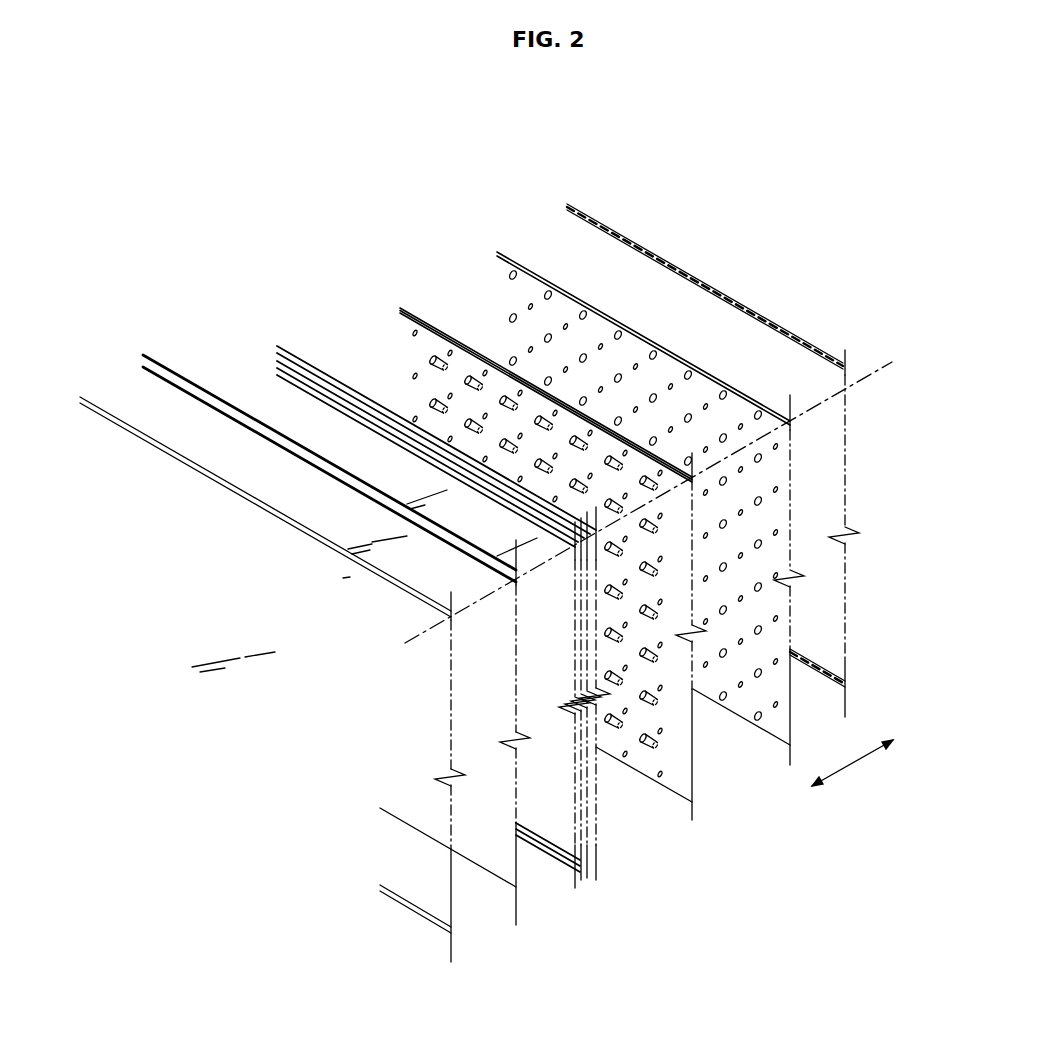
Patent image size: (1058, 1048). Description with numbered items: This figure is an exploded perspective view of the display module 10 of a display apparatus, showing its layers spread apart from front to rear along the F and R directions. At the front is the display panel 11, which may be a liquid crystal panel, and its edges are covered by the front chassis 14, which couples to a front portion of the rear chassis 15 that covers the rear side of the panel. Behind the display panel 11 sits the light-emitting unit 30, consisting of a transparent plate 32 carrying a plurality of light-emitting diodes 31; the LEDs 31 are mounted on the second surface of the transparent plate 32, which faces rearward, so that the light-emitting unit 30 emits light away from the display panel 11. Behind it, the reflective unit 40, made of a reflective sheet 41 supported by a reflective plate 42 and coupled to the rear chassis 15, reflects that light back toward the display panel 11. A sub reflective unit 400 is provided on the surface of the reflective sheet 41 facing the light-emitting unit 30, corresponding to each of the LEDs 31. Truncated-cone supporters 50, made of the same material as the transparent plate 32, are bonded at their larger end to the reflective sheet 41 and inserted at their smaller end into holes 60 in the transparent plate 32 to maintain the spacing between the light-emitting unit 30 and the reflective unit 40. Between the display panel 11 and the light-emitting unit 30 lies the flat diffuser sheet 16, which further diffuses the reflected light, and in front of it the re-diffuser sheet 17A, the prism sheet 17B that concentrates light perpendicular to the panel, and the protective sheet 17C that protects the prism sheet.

The display module 10 is at (327, 184).
The display panel 11 is at (495, 868).
The front chassis 14 is at (402, 900).
The rear chassis 15 is at (746, 300).
The diffuser sheet 16 is at (383, 410).
The re-diffuser sheet 17A is at (580, 863).
The prism sheet 17B is at (578, 873).
The protective sheet 17C is at (562, 865).
The light-emitting unit 30 is at (537, 535).
The light-emitting diodes 31 is at (412, 330).
The transparent plate 32 is at (478, 352).
The reflective unit 40 is at (628, 319).
The reflective sheet 41 is at (545, 287).
The reflective plate 42 is at (643, 338).
The sub reflective unit 400 is at (512, 275).
The supporter 50 is at (436, 355).
The hole 60 is at (600, 347).